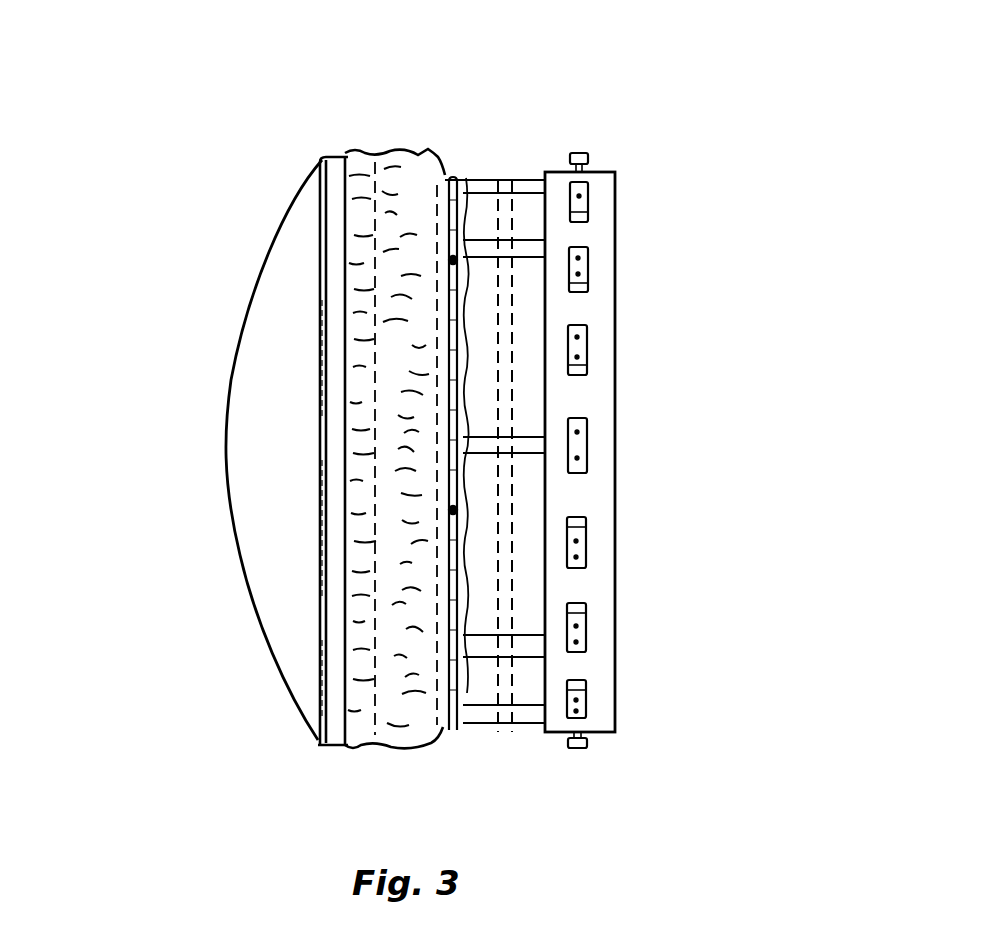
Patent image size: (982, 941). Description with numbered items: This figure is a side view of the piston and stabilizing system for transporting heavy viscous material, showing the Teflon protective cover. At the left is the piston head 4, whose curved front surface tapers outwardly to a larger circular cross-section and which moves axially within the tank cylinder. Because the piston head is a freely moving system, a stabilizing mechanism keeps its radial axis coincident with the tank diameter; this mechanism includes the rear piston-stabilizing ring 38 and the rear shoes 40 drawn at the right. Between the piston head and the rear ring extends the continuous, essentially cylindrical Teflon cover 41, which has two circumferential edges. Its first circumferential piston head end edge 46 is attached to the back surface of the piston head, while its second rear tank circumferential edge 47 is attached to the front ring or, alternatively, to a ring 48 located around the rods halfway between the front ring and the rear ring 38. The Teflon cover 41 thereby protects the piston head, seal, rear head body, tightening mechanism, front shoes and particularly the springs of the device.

The piston head 4 is at (275, 408).
The rear piston-stabilizing ring 38 is at (598, 308).
The rear shoes 40 is at (590, 148).
The Teflon protective cover 41 is at (393, 368).
The first circumferential piston head end edge 46 is at (343, 208).
The second rear tank circumferential edge 47 is at (458, 217).
The ring 48 is at (505, 222).